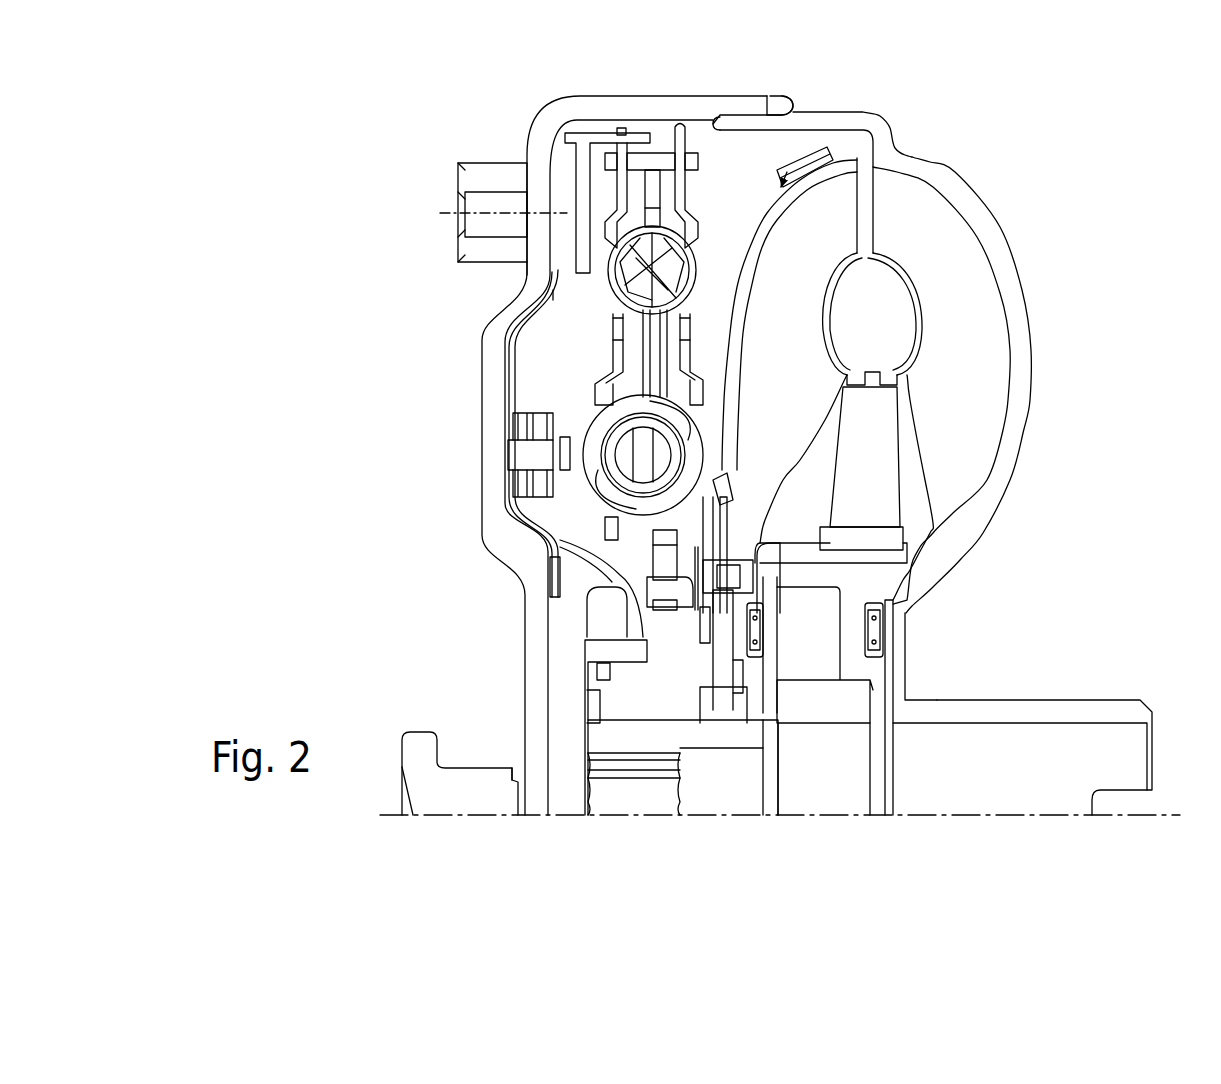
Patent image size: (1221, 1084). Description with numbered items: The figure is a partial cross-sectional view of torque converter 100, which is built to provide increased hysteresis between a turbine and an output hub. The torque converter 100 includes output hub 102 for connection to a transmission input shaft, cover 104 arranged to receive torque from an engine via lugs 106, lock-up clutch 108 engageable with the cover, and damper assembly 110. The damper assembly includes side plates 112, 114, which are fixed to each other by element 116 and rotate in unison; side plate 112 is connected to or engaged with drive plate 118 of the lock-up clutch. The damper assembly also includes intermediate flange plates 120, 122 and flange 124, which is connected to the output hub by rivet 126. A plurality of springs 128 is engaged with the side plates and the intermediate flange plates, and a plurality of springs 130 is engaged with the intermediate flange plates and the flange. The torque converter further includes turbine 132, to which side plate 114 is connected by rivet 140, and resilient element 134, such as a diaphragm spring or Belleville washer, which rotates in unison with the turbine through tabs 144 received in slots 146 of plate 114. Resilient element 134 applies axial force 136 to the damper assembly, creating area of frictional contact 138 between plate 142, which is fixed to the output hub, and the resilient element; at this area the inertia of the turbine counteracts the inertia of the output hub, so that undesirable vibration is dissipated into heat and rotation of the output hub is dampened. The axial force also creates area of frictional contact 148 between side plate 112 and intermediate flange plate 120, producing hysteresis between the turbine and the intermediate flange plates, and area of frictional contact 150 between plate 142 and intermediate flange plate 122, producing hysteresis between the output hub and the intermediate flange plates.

The torque converter 100 is at (968, 138).
The output hub 102 is at (652, 745).
The cover 104 is at (537, 118).
The lugs 106 is at (457, 168).
The lock-up clutch 108 is at (522, 262).
The damper assembly 110 is at (578, 357).
The side plate 112 is at (618, 118).
The side plate 114 is at (687, 128).
The element 116 is at (663, 152).
The drive plate 118 is at (568, 153).
The intermediate flange plate 120 is at (580, 398).
The intermediate flange plate 122 is at (706, 400).
The flange 124 is at (662, 566).
The rivet 126 is at (665, 678).
The plurality of springs 128 is at (607, 250).
The plurality of springs 130 is at (585, 482).
The turbine 132 is at (800, 357).
The resilient element 134 is at (722, 497).
The axial force 136 is at (1087, 530).
The area of frictional contact 138 is at (722, 530).
The rivet 140 is at (897, 603).
The plate 142 is at (700, 597).
The tabs 144 is at (722, 477).
The slots 146 is at (733, 468).
The area of frictional contact 148 is at (612, 316).
The area of frictional contact 150 is at (668, 563).